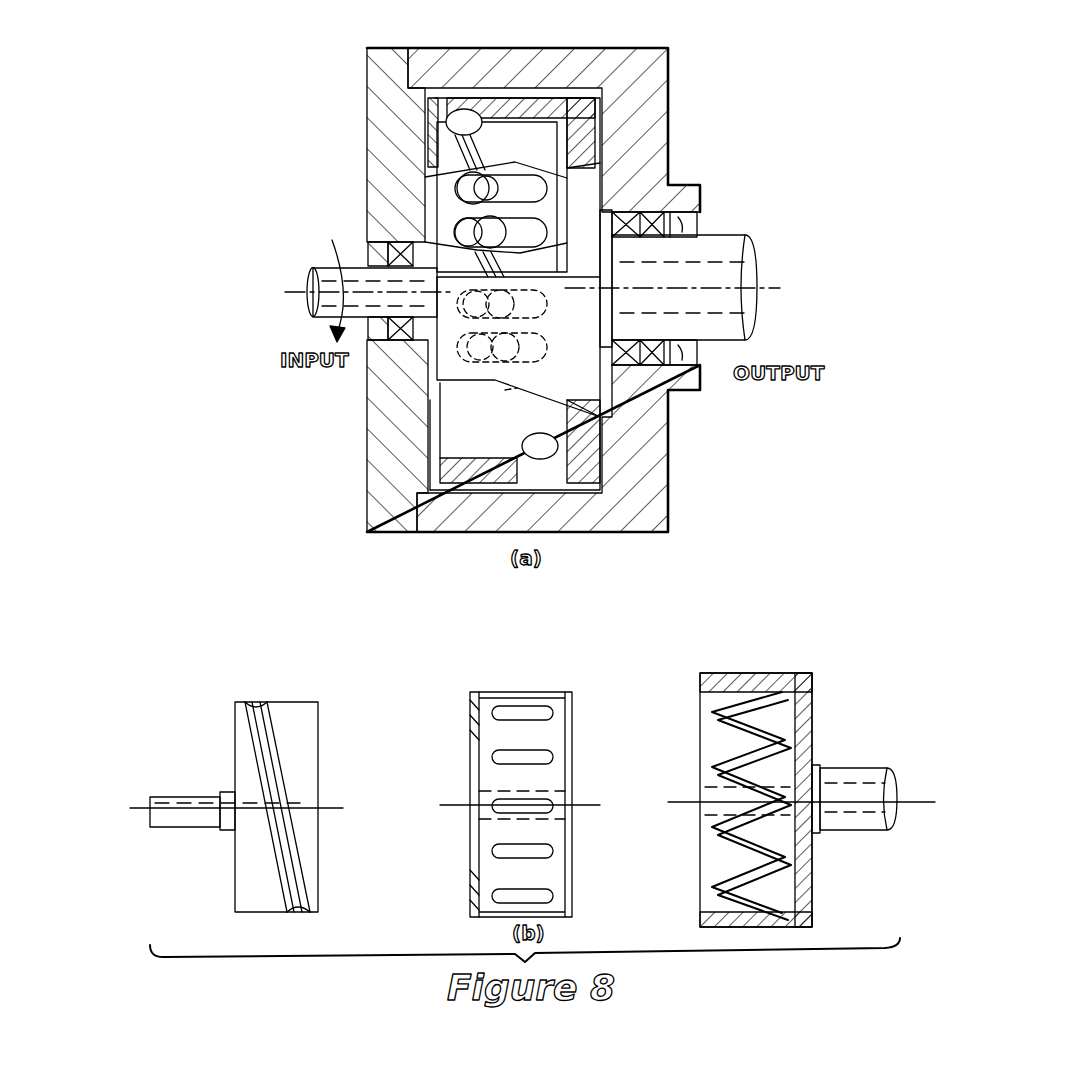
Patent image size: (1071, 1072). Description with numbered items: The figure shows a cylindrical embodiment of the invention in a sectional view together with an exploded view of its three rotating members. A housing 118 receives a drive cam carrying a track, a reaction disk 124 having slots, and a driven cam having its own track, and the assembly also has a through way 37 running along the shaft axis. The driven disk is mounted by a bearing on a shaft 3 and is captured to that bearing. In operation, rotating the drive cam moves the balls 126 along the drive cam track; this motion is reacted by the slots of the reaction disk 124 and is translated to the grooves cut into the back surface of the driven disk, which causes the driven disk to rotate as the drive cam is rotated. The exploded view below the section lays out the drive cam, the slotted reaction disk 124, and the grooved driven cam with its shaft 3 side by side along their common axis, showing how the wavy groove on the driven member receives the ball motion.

The housing 118 is at (420, 48).
The ball 126 is at (477, 190).
The through way 37 is at (742, 279).
The reaction disk 124 is at (502, 692).
The shaft 3 is at (875, 792).